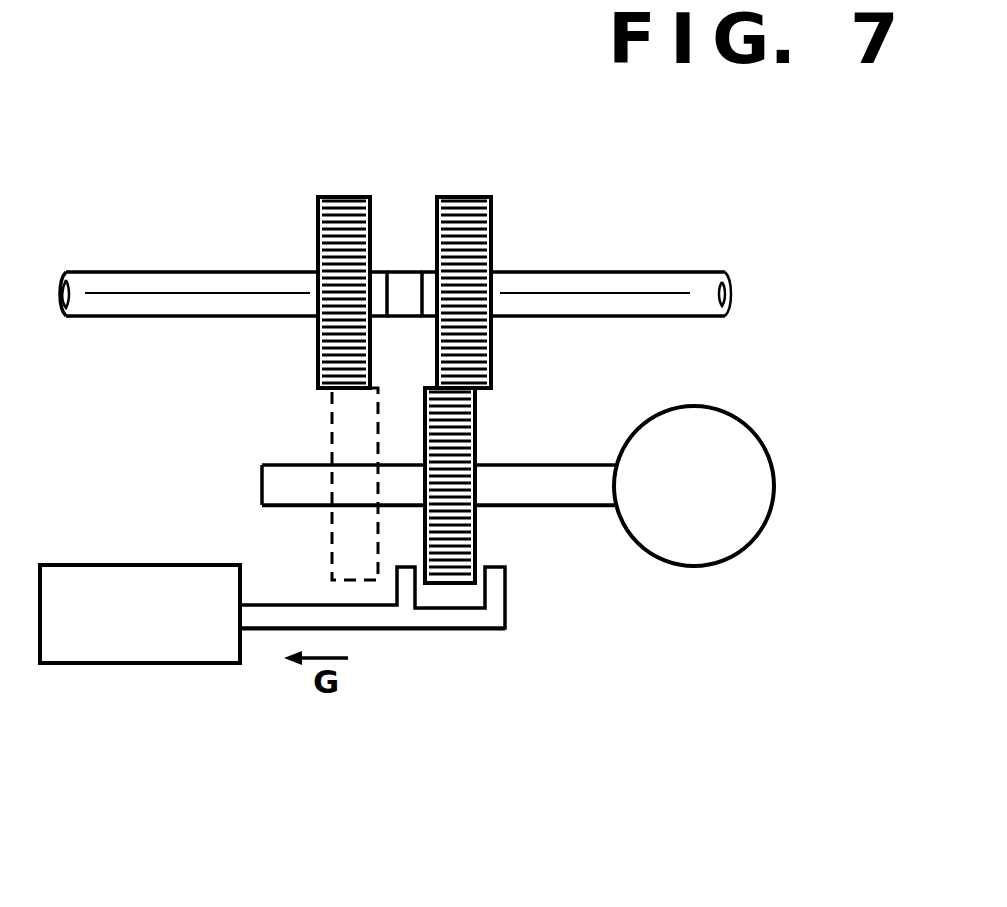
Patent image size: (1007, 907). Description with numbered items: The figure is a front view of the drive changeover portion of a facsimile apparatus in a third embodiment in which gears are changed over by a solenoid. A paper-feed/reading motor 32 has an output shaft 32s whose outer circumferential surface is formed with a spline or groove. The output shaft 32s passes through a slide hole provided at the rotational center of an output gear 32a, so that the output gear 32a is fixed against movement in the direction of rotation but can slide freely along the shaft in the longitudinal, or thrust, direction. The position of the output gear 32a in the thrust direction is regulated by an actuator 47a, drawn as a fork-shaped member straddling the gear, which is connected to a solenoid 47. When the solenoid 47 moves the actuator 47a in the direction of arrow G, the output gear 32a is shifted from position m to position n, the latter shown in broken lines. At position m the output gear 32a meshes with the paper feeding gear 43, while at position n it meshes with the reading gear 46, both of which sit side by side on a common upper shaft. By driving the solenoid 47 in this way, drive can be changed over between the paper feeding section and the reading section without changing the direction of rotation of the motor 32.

The reading gear 46 is at (318, 218).
The paper feeding gear 43 is at (492, 222).
The paper-feed/reading motor 32 is at (773, 462).
The output gear 32a is at (478, 432).
The output shaft 32s is at (558, 507).
The solenoid 47 is at (90, 664).
The actuator 47a is at (408, 614).
The position m is at (486, 518).
The position n is at (326, 511).